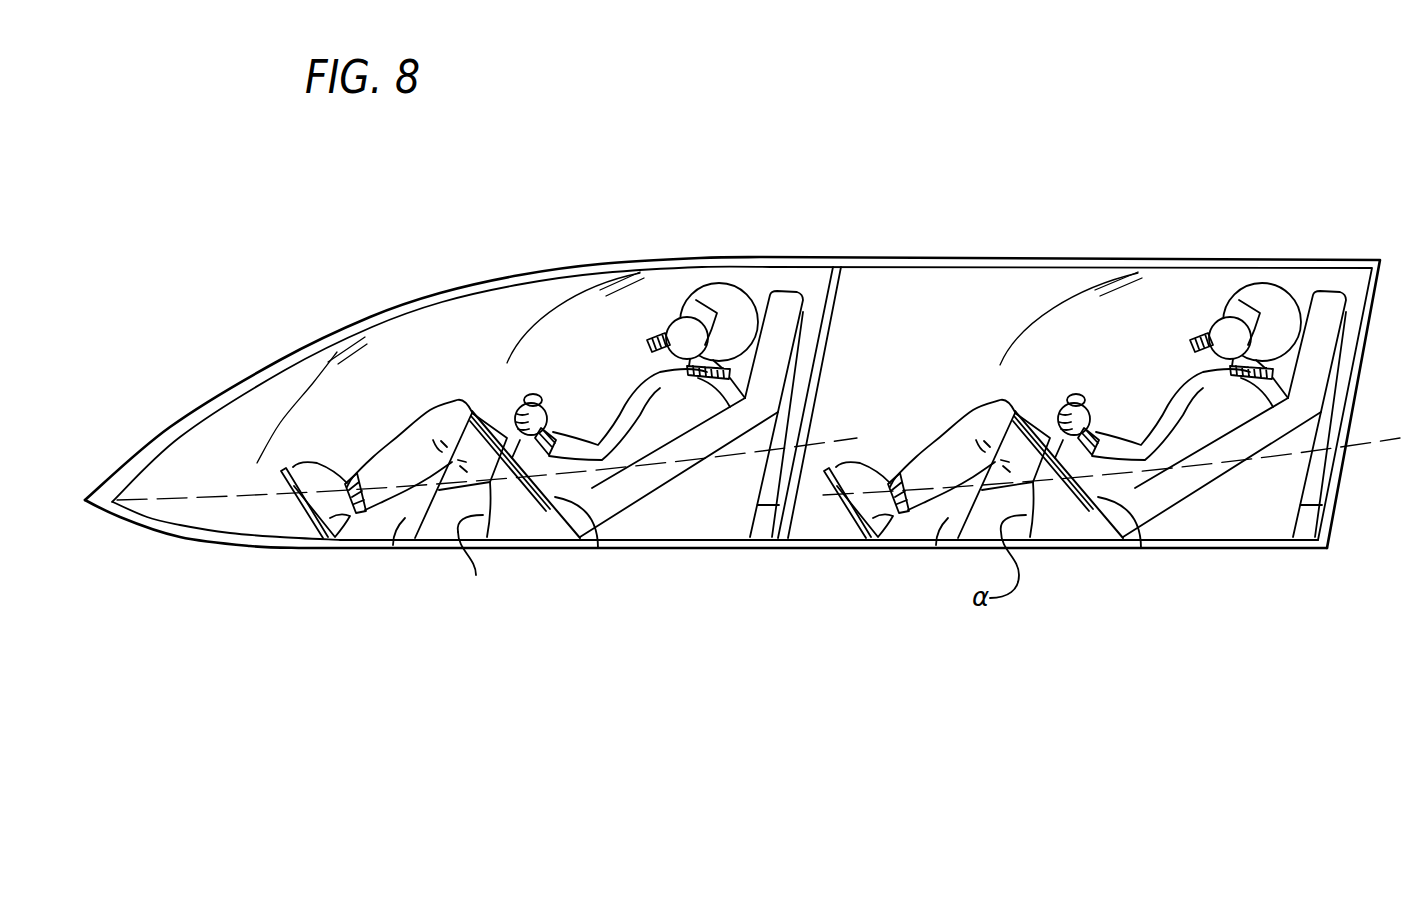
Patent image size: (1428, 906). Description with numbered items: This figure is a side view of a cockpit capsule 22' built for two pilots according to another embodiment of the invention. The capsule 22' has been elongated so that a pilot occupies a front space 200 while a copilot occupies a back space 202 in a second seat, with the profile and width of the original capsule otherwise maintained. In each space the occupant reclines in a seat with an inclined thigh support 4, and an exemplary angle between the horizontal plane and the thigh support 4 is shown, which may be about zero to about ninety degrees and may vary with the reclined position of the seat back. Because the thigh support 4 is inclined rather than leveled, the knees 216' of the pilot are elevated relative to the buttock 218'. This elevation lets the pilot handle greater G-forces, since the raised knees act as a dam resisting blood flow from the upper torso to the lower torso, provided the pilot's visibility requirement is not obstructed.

The capsule 22' is at (742, 347).
The front space 200 is at (393, 545).
The back space 202 is at (817, 522).
The thigh support 4 is at (523, 502).
The knees 216' is at (438, 405).
The buttock 218' is at (548, 518).